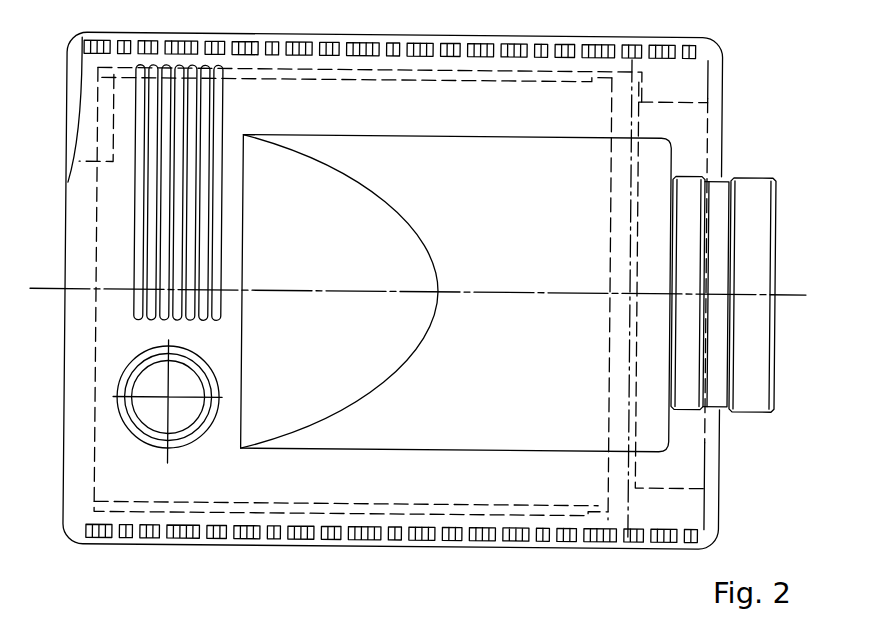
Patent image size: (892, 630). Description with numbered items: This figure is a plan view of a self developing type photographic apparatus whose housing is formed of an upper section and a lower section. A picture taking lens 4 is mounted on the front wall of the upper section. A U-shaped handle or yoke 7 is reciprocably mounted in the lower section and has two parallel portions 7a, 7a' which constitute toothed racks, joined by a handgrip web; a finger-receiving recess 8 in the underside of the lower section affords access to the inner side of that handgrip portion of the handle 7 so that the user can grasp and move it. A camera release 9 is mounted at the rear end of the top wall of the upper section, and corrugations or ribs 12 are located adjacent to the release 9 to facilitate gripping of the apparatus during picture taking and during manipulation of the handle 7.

The picture taking lens 4 is at (748, 193).
The U-shaped handle 7 is at (705, 513).
The parallel portion 7a is at (390, 29).
The parallel portion 7a' is at (392, 560).
The finger-receiving recess 8 is at (685, 460).
The camera release 9 is at (158, 415).
The corrugations or ribs 12 is at (157, 187).